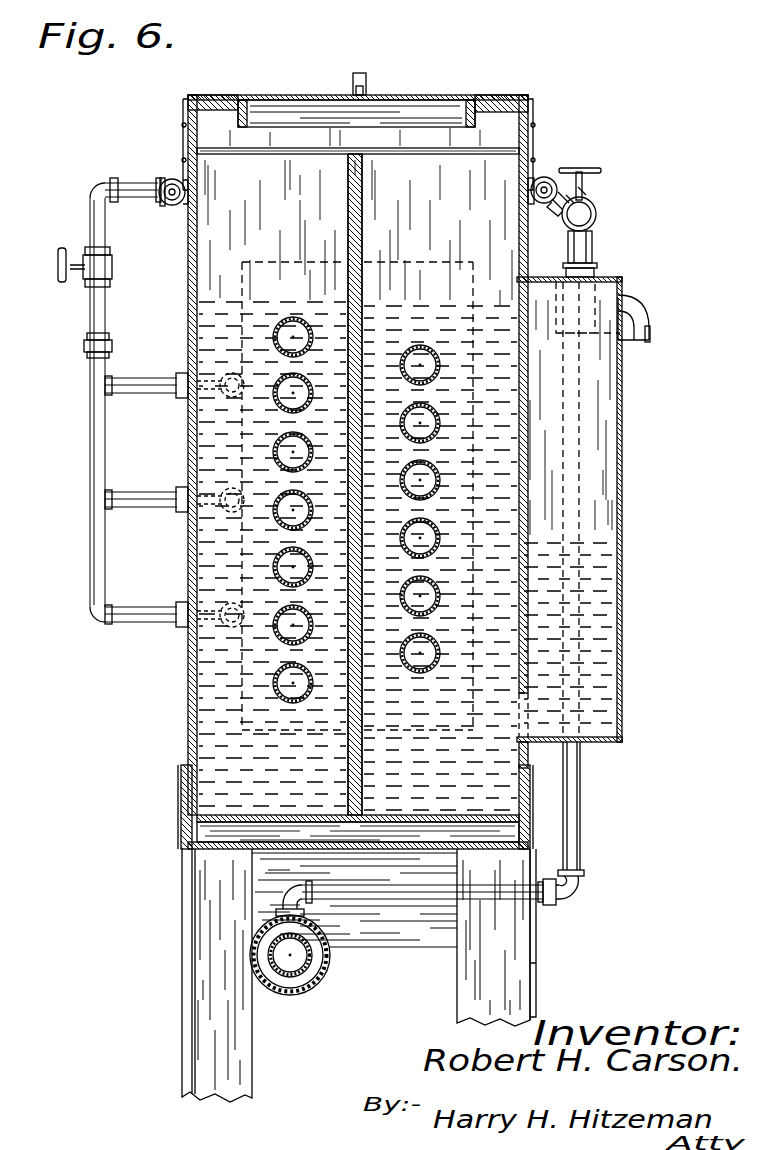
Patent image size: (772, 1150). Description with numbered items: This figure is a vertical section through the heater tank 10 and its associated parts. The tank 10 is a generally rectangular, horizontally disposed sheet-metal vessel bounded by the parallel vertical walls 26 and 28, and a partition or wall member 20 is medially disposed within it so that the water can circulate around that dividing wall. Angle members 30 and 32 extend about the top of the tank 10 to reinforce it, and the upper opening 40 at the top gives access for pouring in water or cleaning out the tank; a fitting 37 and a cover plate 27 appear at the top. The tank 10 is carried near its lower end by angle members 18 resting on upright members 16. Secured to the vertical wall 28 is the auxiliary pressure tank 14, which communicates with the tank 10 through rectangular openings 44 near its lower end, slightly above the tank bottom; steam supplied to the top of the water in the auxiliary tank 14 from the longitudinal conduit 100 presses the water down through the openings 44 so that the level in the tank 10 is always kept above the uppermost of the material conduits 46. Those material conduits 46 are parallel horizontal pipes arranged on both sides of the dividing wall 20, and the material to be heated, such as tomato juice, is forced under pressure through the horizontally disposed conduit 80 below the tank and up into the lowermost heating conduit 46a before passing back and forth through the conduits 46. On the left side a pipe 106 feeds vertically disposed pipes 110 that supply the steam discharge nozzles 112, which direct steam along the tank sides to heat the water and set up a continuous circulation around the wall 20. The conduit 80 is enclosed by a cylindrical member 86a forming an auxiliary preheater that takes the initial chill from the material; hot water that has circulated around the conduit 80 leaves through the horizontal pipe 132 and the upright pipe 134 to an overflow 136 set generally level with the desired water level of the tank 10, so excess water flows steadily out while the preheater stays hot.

The heater tank 10 is at (188, 722).
The auxiliary pressure tank 14 is at (622, 620).
The upright members 16 is at (182, 1038).
The angle members 18 is at (188, 835).
The partition or wall member 20 is at (362, 228).
The vertical wall 26 is at (197, 254).
The cover plate 27 is at (348, 164).
The vertical wall 28 is at (519, 240).
The angle member 30 is at (188, 104).
The angle member 32 is at (528, 122).
The vent fitting 37 is at (400, 98).
The upper opening 40 is at (262, 100).
The rectangular openings 44 is at (517, 714).
The material conduits 46 is at (276, 528).
The lowermost heating conduit 46a is at (293, 704).
The horizontally disposed conduit 80 is at (300, 995).
The cylindrical member 86a is at (330, 977).
The longitudinal conduit 100 is at (549, 179).
The pipe 106 is at (170, 206).
The vertically disposed pipes 110 is at (90, 378).
The steam discharge nozzles 112 is at (224, 505).
The horizontal pipe 132 is at (384, 899).
The upright pipe 134 is at (582, 775).
The overflow 136 is at (652, 333).